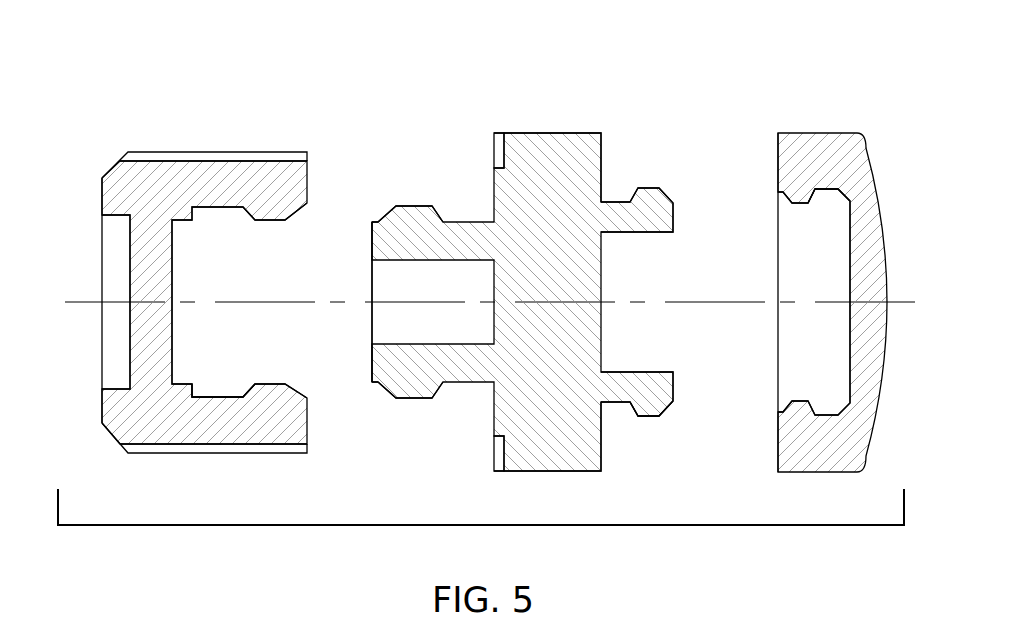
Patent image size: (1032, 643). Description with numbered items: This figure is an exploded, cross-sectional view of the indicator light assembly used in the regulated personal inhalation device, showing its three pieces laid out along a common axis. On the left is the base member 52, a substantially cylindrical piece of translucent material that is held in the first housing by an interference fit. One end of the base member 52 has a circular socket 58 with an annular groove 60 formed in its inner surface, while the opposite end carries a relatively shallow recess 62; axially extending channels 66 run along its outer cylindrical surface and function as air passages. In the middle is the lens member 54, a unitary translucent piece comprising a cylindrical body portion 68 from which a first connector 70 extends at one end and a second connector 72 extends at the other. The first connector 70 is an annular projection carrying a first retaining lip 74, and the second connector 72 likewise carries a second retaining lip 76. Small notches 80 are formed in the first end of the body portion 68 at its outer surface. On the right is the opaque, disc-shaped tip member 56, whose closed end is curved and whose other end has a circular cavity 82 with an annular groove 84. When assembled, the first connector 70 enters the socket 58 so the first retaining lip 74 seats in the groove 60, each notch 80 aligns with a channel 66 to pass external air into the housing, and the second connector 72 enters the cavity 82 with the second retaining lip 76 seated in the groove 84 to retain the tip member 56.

The base member 52 is at (174, 266).
The lens member 54 is at (542, 269).
The tip member 56 is at (832, 254).
The socket 58 is at (226, 279).
The annular groove 60 is at (218, 397).
The recess 62 is at (110, 238).
The axially extending channels 66 is at (288, 152).
The cylindrical body portion 68 is at (578, 145).
The first connector 70 is at (374, 221).
The second connector 72 is at (674, 213).
The first retaining lip 74 is at (412, 206).
The second retaining lip 76 is at (650, 416).
The notches 80 is at (497, 149).
The circular cavity 82 is at (798, 348).
The annular groove 84 is at (830, 190).